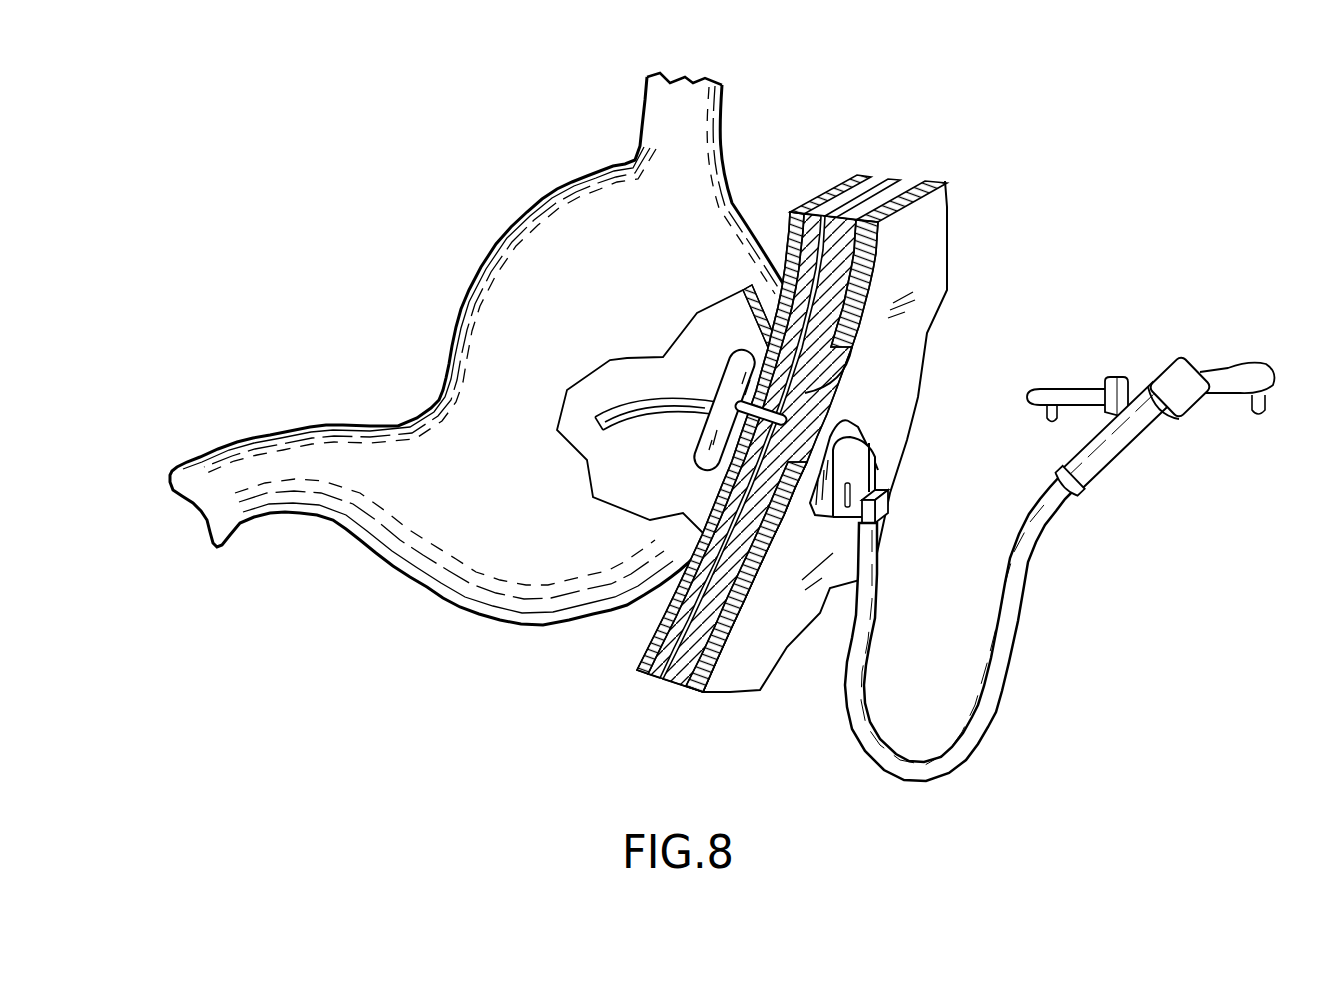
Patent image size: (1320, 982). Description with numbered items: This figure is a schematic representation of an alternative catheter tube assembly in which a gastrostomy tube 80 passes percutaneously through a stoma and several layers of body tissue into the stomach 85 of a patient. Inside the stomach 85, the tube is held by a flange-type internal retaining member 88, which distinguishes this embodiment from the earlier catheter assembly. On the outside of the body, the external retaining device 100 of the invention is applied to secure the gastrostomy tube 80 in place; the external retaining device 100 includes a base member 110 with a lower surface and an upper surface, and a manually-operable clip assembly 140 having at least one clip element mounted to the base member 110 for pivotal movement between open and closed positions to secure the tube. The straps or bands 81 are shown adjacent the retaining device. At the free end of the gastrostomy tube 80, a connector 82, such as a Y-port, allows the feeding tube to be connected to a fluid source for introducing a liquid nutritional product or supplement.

The gastrostomy tube 80 is at (975, 757).
The retaining straps 81 is at (903, 172).
The connector 82 is at (1128, 455).
The stomach 85 is at (520, 250).
The flange-type internal retaining member 88 is at (727, 368).
The external retaining device 100 is at (890, 432).
The base member 110 is at (827, 463).
The manually-operable clip assembly 140 is at (885, 508).